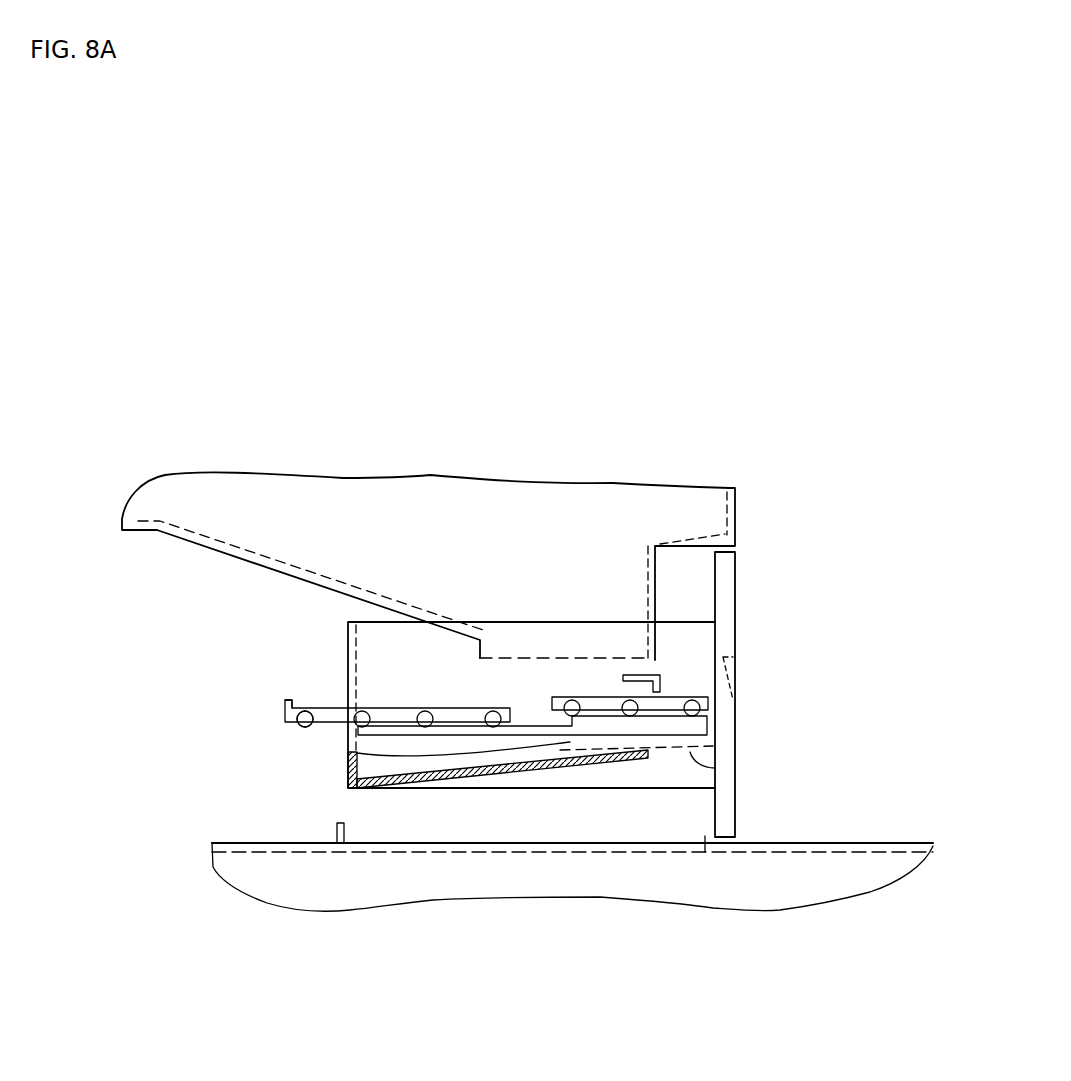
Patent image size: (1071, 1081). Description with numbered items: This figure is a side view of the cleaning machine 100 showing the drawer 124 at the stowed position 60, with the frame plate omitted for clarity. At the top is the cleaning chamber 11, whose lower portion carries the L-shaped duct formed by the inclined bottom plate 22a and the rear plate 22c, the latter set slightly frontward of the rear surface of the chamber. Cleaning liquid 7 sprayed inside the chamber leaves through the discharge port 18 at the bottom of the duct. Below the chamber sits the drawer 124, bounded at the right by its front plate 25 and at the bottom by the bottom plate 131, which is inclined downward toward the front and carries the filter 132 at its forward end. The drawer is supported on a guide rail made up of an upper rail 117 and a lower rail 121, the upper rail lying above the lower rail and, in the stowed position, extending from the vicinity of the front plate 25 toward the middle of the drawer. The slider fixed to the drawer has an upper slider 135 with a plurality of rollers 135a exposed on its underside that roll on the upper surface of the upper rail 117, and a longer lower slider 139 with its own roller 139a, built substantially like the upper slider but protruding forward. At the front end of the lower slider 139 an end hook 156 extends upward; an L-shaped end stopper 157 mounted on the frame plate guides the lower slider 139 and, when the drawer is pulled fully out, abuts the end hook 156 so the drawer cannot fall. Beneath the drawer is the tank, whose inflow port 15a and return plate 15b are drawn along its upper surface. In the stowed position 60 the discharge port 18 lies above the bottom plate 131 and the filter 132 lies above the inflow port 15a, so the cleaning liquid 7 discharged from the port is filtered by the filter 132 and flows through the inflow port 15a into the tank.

The cleaning machine 100 is at (944, 451).
The cleaning chamber 11 is at (737, 508).
The drawer 124 is at (800, 568).
The stowed position 60 is at (805, 566).
The front plate 25 is at (735, 635).
The end stopper 157 is at (662, 683).
The upper slider 135 is at (710, 705).
The bottom plate 131 is at (715, 768).
The bottom plate 22a is at (330, 582).
The cleaning liquid 7 is at (508, 646).
The discharge port 18 is at (546, 657).
The rear plate 22c is at (643, 603).
The lower slider 139 is at (333, 705).
The end hook 156 is at (287, 700).
The roller 139a is at (305, 728).
The filter 132 is at (350, 768).
The return plate 15b is at (336, 835).
The inflow port 15a is at (413, 840).
The lower rail 121 is at (538, 722).
The roller 135a is at (563, 717).
The upper rail 117 is at (668, 715).